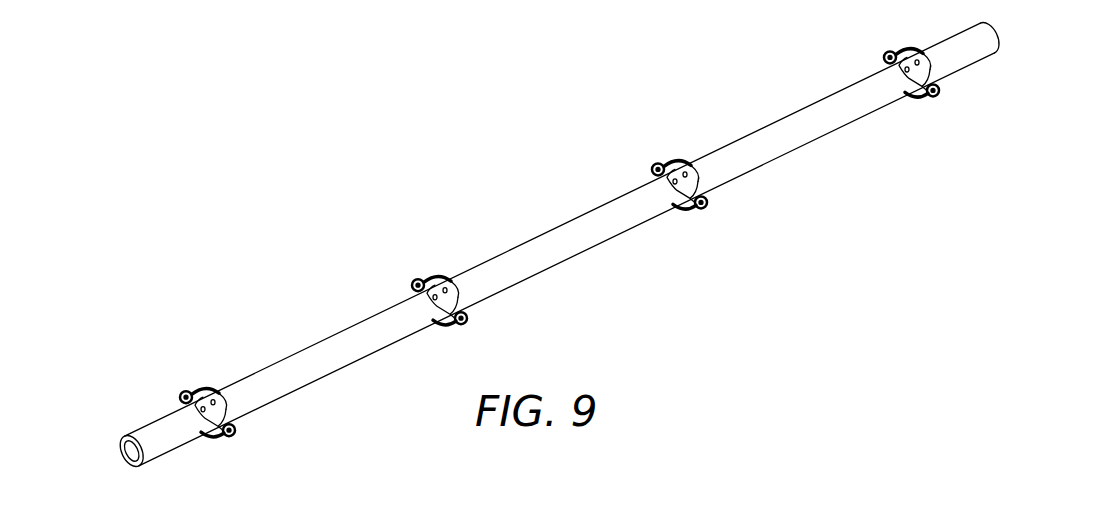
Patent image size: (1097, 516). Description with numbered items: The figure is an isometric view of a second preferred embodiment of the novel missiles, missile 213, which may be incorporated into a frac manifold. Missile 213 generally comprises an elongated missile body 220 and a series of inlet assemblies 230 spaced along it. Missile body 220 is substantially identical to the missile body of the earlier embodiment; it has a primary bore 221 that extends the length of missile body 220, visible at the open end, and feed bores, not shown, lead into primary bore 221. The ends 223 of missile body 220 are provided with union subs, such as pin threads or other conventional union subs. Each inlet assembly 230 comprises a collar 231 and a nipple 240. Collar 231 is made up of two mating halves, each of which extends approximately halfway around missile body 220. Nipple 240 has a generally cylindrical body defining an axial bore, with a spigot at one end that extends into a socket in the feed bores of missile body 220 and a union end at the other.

The missile 213 is at (346, 233).
The missile body 220 is at (341, 351).
The primary bore 221 is at (122, 449).
The end of tube 223 is at (133, 467).
The inlet assembly 230 is at (172, 403).
The collar 231 is at (232, 405).
The nipple 240 is at (184, 393).